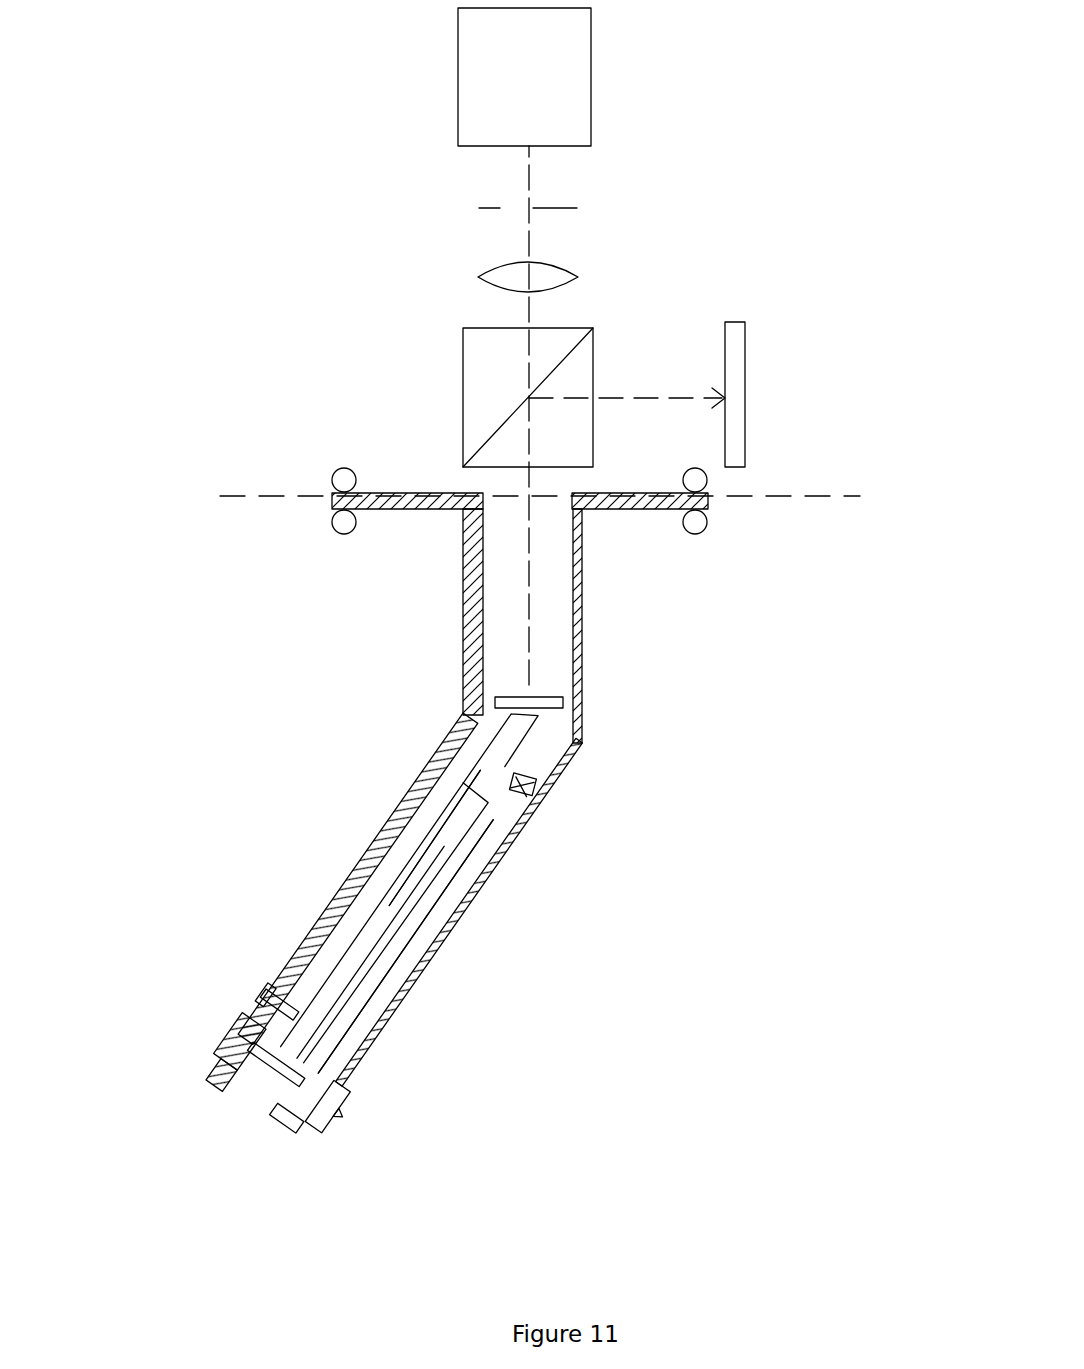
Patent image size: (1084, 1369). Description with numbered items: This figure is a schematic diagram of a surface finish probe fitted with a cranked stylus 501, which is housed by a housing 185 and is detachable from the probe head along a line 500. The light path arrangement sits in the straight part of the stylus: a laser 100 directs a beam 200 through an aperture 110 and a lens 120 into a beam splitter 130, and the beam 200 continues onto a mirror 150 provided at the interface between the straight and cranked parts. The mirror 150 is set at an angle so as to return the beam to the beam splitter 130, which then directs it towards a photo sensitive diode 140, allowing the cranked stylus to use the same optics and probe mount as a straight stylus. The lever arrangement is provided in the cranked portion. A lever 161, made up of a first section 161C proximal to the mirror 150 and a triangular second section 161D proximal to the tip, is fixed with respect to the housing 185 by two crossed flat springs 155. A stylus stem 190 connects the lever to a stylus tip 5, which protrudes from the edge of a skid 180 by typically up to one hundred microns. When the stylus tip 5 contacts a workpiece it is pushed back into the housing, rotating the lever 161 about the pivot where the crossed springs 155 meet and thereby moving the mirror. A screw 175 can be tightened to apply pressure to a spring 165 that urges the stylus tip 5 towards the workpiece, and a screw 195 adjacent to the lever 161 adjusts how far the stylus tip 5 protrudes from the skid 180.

The laser 100 is at (485, 58).
The beam 200 is at (529, 178).
The aperture 110 is at (468, 205).
The lens 120 is at (465, 265).
The beam splitter 130 is at (463, 380).
The photo sensitive diode 140 is at (746, 404).
The line 500 is at (238, 496).
The stylus 501 is at (642, 748).
The mirror 150 is at (548, 702).
The crossed flat springs 155 is at (487, 797).
The spring 165 is at (405, 898).
The housing 185 is at (317, 920).
The lever 161 is at (755, 953).
The first section 161C is at (480, 770).
The second section 161D is at (393, 953).
The screw 175 is at (257, 1002).
The stylus stem 190 is at (270, 1065).
The screw 195 is at (290, 1127).
The skid 180 is at (347, 1090).
The stylus tip 5 is at (340, 1113).